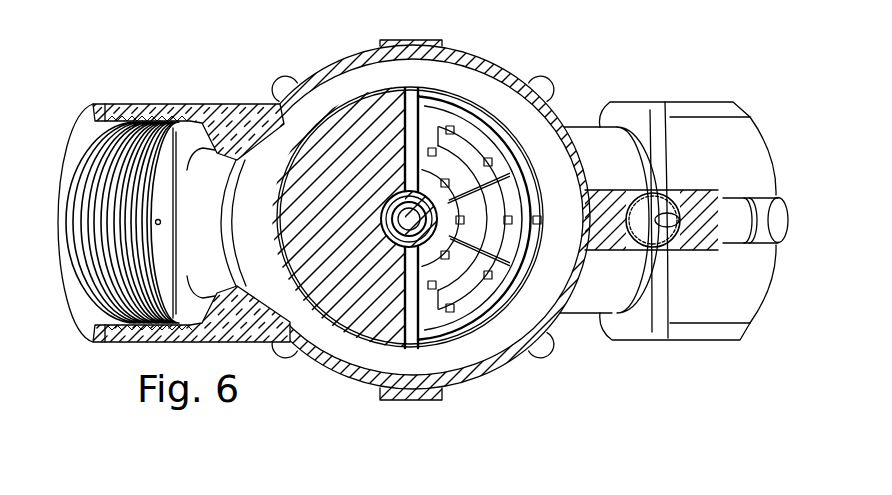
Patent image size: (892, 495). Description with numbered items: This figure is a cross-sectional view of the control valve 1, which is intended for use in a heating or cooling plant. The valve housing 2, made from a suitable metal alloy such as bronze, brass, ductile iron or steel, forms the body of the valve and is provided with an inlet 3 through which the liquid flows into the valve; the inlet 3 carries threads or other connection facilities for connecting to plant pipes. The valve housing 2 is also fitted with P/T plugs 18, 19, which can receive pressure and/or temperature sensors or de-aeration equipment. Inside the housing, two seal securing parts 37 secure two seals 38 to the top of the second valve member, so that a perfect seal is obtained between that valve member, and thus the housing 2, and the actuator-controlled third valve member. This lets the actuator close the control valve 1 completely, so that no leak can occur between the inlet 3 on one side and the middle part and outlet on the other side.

The control valve 1 is at (204, 60).
The valve housing 2 is at (300, 78).
The inlet 3 is at (100, 243).
The P/T plug 18 is at (660, 197).
The P/T plug 19 is at (733, 238).
The seal securing part 37 is at (487, 150).
The seal 38 is at (418, 94).